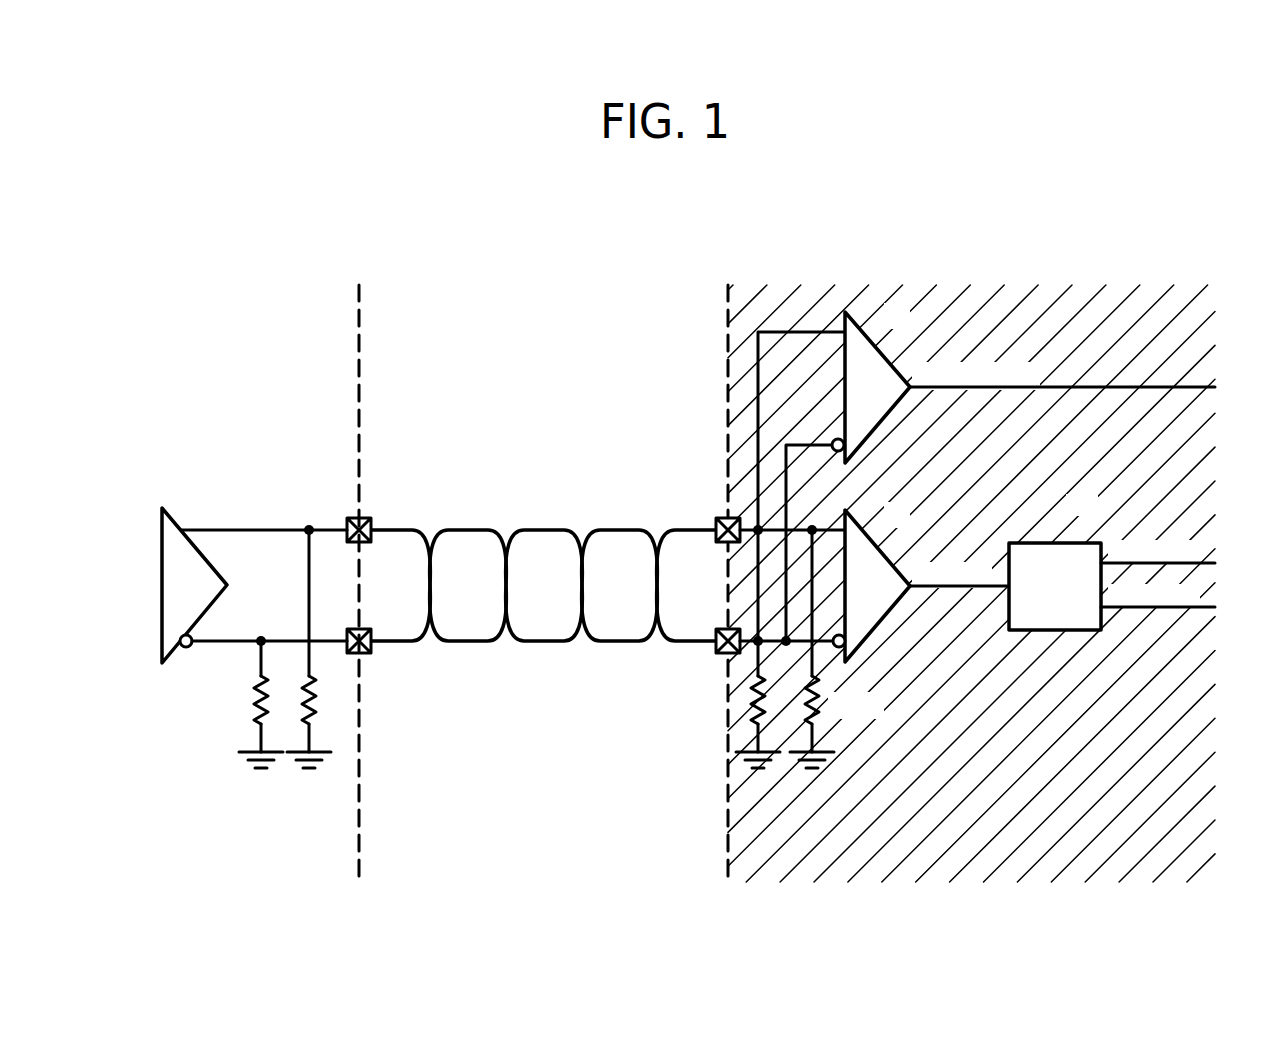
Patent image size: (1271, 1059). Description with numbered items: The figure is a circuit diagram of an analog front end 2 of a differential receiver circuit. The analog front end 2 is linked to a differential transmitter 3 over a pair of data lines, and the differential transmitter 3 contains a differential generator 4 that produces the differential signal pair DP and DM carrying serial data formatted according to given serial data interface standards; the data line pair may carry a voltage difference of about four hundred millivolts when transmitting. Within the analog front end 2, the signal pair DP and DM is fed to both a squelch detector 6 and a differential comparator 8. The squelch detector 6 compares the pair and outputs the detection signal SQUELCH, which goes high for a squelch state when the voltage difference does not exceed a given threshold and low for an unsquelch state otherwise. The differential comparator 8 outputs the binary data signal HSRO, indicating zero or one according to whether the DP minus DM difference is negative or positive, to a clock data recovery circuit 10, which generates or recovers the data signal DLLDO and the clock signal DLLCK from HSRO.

The analog front end 2 is at (786, 247).
The differential transmitter 3 is at (243, 247).
The differential generator 4 is at (162, 547).
The squelch detector 6 is at (869, 341).
The differential comparator 8 is at (869, 540).
The clock data recovery circuit 10 is at (1062, 543).